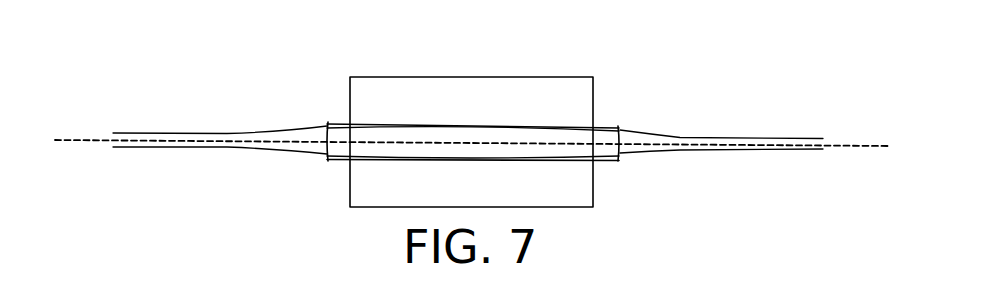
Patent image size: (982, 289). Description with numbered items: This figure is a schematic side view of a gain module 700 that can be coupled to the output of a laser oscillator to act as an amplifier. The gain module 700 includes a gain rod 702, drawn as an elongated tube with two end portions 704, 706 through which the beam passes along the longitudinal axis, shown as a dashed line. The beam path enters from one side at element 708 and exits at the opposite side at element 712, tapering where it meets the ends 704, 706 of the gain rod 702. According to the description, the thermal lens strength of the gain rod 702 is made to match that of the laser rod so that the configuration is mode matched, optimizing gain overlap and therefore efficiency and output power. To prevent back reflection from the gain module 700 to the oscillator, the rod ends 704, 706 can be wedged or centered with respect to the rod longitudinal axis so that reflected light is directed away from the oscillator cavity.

The gain module 700 is at (383, 77).
The gain rod 702 is at (565, 125).
The first end of tube 704 is at (323, 151).
The second end of tube 706 is at (617, 150).
The first optical fiber 708 is at (137, 148).
The second optical fiber 712 is at (662, 136).